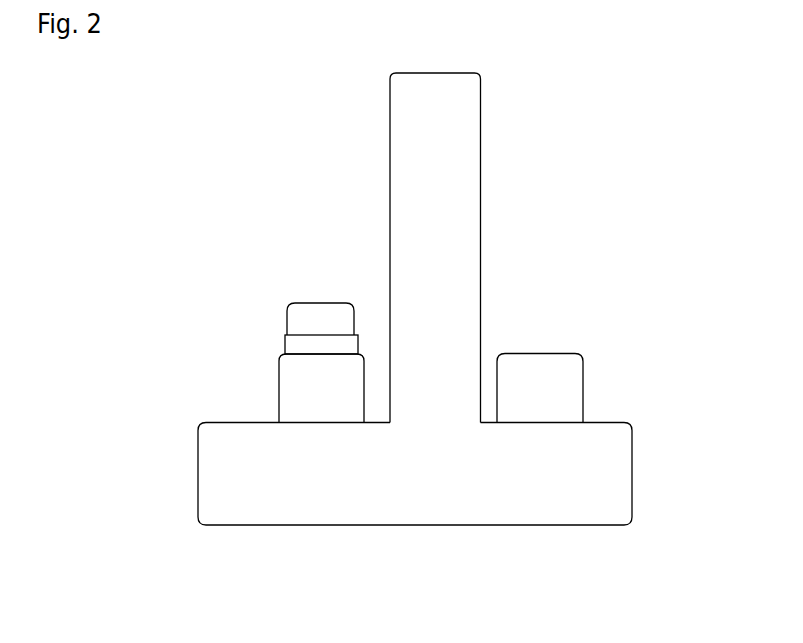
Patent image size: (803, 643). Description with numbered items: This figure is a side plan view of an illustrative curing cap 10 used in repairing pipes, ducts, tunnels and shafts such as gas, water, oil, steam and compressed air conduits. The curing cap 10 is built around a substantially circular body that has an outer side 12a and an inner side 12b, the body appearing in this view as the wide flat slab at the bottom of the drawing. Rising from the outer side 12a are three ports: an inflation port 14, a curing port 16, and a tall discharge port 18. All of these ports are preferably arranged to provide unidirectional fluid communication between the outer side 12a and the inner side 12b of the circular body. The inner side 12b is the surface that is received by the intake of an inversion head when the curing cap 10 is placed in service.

The curing cap 10 is at (713, 472).
The outer side 12a is at (240, 422).
The inner side 12b is at (363, 525).
The inflation port 14 is at (303, 343).
The curing port 16 is at (566, 384).
The discharge port 18 is at (448, 158).